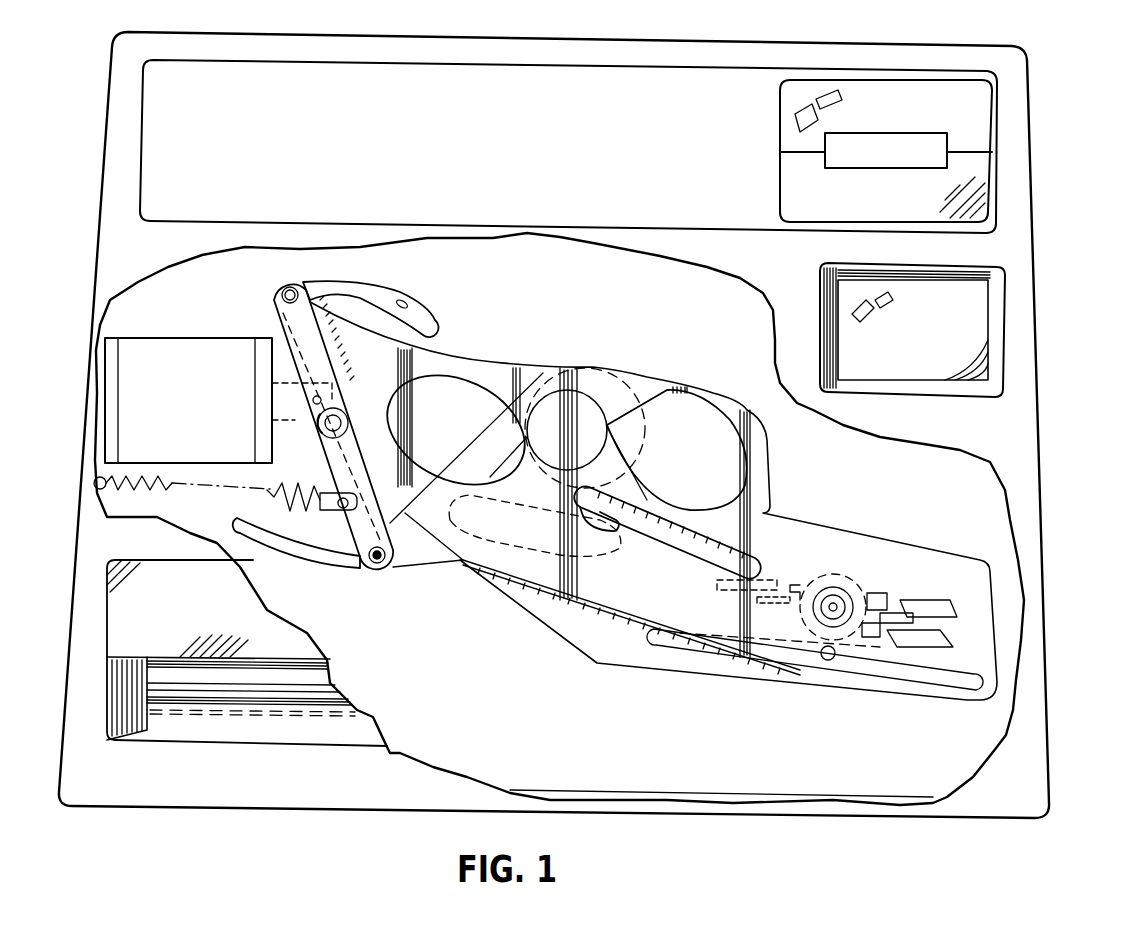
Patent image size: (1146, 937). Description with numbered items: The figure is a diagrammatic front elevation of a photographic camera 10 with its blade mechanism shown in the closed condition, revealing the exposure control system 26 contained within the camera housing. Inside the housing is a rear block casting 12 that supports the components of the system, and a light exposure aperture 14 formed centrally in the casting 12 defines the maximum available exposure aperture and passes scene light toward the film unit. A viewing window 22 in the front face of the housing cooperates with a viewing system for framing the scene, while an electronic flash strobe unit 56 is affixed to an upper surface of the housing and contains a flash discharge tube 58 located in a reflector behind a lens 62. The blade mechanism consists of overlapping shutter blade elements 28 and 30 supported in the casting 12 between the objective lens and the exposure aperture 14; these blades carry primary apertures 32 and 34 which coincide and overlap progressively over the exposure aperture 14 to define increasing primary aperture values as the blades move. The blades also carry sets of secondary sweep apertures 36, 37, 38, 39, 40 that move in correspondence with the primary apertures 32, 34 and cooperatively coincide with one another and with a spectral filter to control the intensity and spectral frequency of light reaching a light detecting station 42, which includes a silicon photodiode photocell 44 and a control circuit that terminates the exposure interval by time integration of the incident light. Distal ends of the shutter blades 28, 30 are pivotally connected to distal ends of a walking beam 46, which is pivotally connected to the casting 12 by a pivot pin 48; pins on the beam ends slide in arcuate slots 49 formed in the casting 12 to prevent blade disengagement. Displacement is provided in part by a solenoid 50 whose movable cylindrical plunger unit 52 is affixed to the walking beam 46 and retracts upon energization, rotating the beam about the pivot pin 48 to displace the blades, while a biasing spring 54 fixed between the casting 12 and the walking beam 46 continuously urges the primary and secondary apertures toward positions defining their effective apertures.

The photographic camera 10 is at (1070, 188).
The rear block casting 12 is at (886, 486).
The light exposure aperture 14 is at (553, 365).
The viewing window 22 is at (930, 336).
The exposure control system 26 is at (527, 330).
The shutter blade element 28 is at (510, 348).
The shutter blade element 30 is at (760, 443).
The primary aperture 32 is at (402, 407).
The primary aperture 34 is at (687, 410).
The secondary sweep aperture set 36 is at (800, 583).
The secondary sweep aperture set 37 is at (783, 623).
The secondary sweep aperture set 38 is at (742, 618).
The secondary sweep aperture set 39 is at (757, 583).
The secondary sweep aperture set 40 is at (943, 633).
The light detecting station 42 is at (830, 567).
The photocell 44 is at (413, 308).
The walking beam 46 is at (283, 276).
The pivot pin 48 is at (333, 437).
The arcuate slot 49 is at (330, 561).
The solenoid 50 is at (177, 362).
The plunger unit 52 is at (312, 428).
The biasing spring 54 is at (283, 507).
The electronic flash strobe unit 56 is at (1038, 110).
The flash discharge tube 58 is at (898, 157).
The lens 62 is at (917, 100).